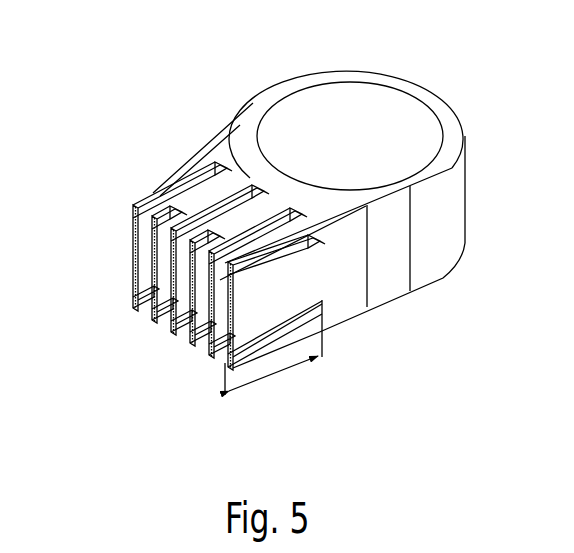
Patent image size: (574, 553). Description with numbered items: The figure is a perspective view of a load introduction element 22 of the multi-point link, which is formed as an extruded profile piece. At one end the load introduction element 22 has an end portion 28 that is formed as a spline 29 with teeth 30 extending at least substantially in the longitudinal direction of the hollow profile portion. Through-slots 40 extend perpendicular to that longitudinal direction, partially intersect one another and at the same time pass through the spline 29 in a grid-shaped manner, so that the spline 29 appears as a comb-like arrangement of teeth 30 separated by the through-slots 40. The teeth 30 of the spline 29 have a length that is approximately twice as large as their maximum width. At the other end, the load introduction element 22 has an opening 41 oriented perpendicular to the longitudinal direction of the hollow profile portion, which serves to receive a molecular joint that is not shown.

The load introduction element 22 is at (393, 68).
The end portion 28 is at (277, 377).
The spline 29 is at (248, 260).
The teeth 30 is at (217, 193).
The through-slots 40 is at (259, 276).
The opening 41 is at (405, 150).